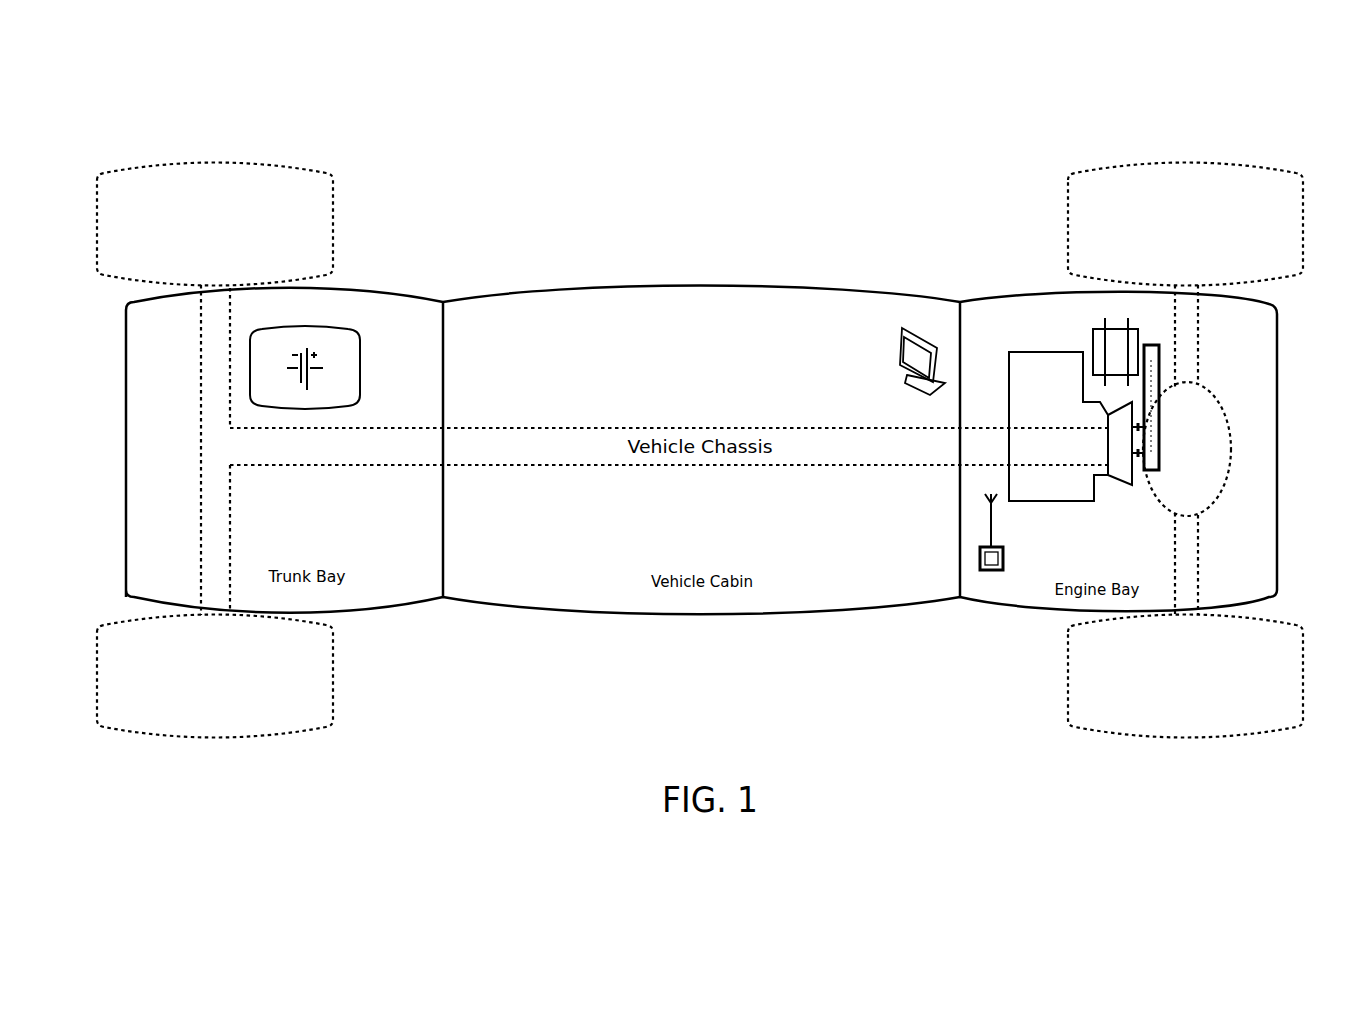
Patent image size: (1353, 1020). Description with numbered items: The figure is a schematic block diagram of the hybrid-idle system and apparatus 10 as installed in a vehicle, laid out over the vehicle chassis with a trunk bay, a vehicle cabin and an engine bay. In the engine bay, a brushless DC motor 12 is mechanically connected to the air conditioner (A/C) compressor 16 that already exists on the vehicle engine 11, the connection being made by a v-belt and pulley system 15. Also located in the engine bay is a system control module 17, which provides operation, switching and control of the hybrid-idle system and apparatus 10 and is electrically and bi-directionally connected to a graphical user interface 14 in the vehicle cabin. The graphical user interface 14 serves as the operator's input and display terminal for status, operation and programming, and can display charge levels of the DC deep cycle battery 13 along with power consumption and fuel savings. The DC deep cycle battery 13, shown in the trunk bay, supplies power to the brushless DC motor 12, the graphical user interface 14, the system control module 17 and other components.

The hybrid-idle system and apparatus 10 is at (1022, 124).
The vehicle engine 11 is at (1043, 370).
The brushless DC motor 12 is at (1090, 335).
The DC deep cycle battery 13 is at (250, 367).
The graphical user interface 14 is at (898, 348).
The v-belt and pulley system 15 is at (1158, 395).
The air conditioner (A/C) compressor 16 is at (1118, 477).
The system control module 17 is at (988, 572).